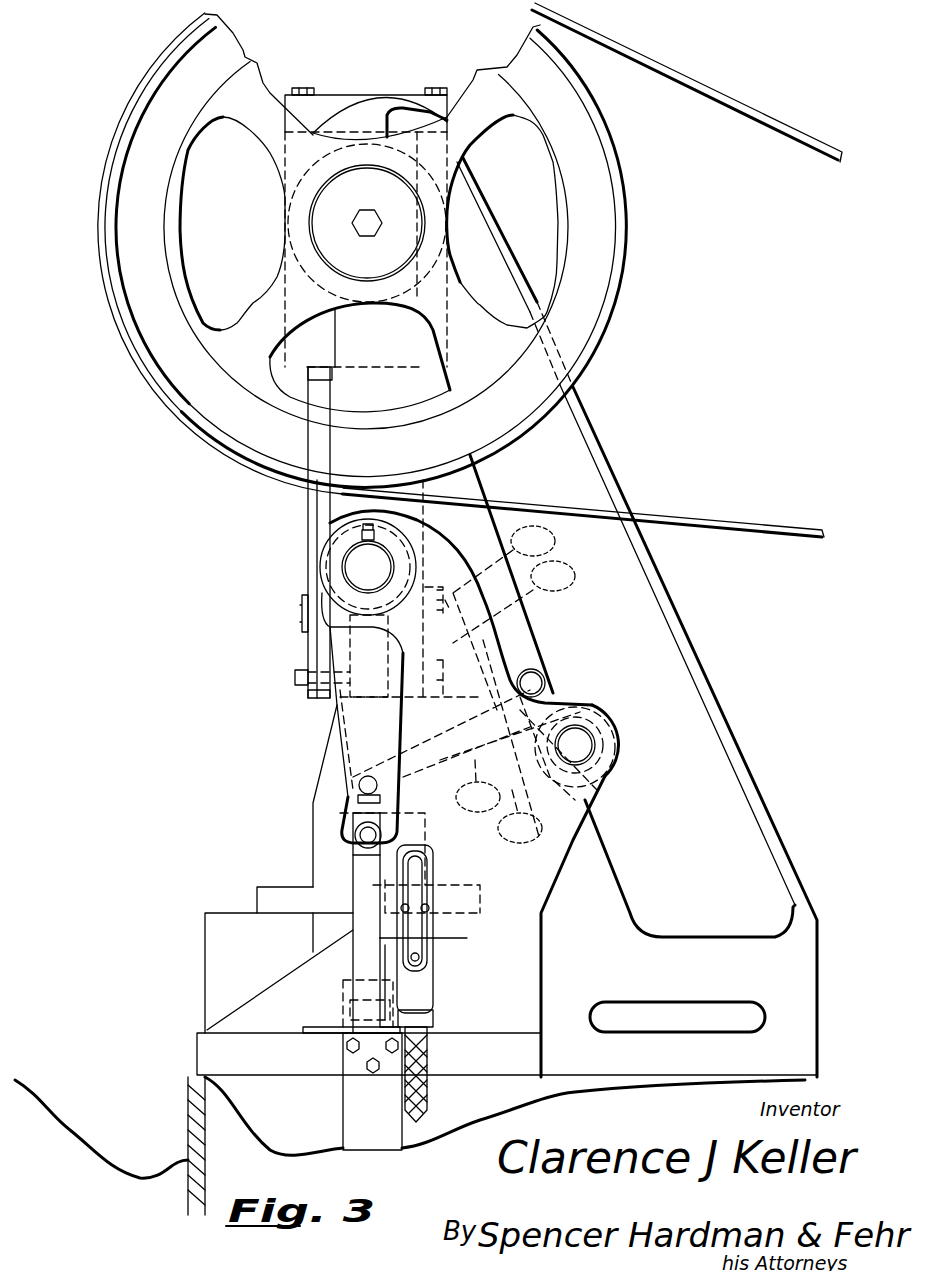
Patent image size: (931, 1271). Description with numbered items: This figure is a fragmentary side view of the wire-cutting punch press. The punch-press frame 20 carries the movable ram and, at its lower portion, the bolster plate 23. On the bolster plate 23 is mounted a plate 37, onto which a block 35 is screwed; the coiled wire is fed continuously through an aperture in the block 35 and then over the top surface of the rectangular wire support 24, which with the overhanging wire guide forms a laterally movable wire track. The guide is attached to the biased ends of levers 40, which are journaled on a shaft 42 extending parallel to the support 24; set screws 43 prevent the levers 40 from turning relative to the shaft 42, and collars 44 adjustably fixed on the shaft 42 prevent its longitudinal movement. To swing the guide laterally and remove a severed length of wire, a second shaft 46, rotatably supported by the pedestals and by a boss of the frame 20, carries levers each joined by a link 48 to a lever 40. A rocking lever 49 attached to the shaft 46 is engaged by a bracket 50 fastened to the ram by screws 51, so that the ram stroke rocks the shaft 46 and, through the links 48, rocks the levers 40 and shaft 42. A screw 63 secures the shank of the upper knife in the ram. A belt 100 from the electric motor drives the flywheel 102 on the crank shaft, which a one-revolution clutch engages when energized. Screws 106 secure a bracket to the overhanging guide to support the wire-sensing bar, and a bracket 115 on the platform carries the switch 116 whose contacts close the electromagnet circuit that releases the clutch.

The punch-press frame 20 is at (565, 410).
The bolster plate 23 is at (215, 945).
The wire support 24 is at (367, 897).
The block 35 is at (328, 843).
The plate 37 is at (273, 897).
The levers 40 is at (355, 731).
The shaft 42 is at (378, 562).
The set screws 43 is at (370, 532).
The collars 44 is at (340, 580).
The shaft 46 is at (580, 738).
The link 48 is at (478, 786).
The rocking lever 49 is at (520, 816).
The bracket 50 is at (553, 576).
The screws 51 is at (533, 541).
The screw 63 is at (295, 678).
The belt 100 is at (787, 133).
The flywheel 102 is at (598, 240).
The screws 106 is at (358, 792).
The bracket 115 is at (457, 938).
The switch 116 is at (437, 853).